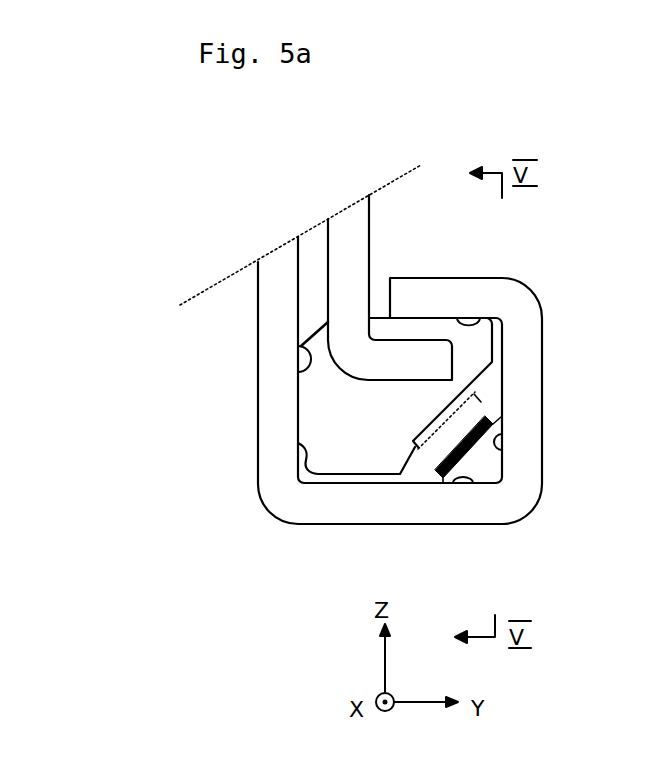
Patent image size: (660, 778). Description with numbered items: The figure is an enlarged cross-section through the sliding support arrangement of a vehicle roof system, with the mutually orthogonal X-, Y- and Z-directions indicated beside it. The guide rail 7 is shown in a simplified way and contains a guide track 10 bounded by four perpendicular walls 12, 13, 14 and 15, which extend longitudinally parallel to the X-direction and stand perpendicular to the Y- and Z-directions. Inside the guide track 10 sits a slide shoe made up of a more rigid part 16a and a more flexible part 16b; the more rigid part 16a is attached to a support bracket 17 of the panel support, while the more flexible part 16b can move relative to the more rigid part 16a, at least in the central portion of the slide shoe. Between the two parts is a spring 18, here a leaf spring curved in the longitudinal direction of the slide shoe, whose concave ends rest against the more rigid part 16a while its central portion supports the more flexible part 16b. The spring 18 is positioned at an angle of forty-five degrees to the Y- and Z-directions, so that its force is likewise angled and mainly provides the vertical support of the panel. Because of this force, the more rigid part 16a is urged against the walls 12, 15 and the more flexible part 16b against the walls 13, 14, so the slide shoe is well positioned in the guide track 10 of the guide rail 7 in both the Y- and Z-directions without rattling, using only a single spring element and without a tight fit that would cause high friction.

The guide rail 7 is at (257, 525).
The guide track 10 is at (411, 472).
The wall 12 is at (479, 319).
The wall 13 is at (494, 447).
The wall 14 is at (472, 486).
The wall 15 is at (300, 345).
The more rigid part 16a is at (317, 420).
The more flexible part 16b is at (483, 466).
The support bracket 17 is at (356, 240).
The spring 18 is at (468, 407).